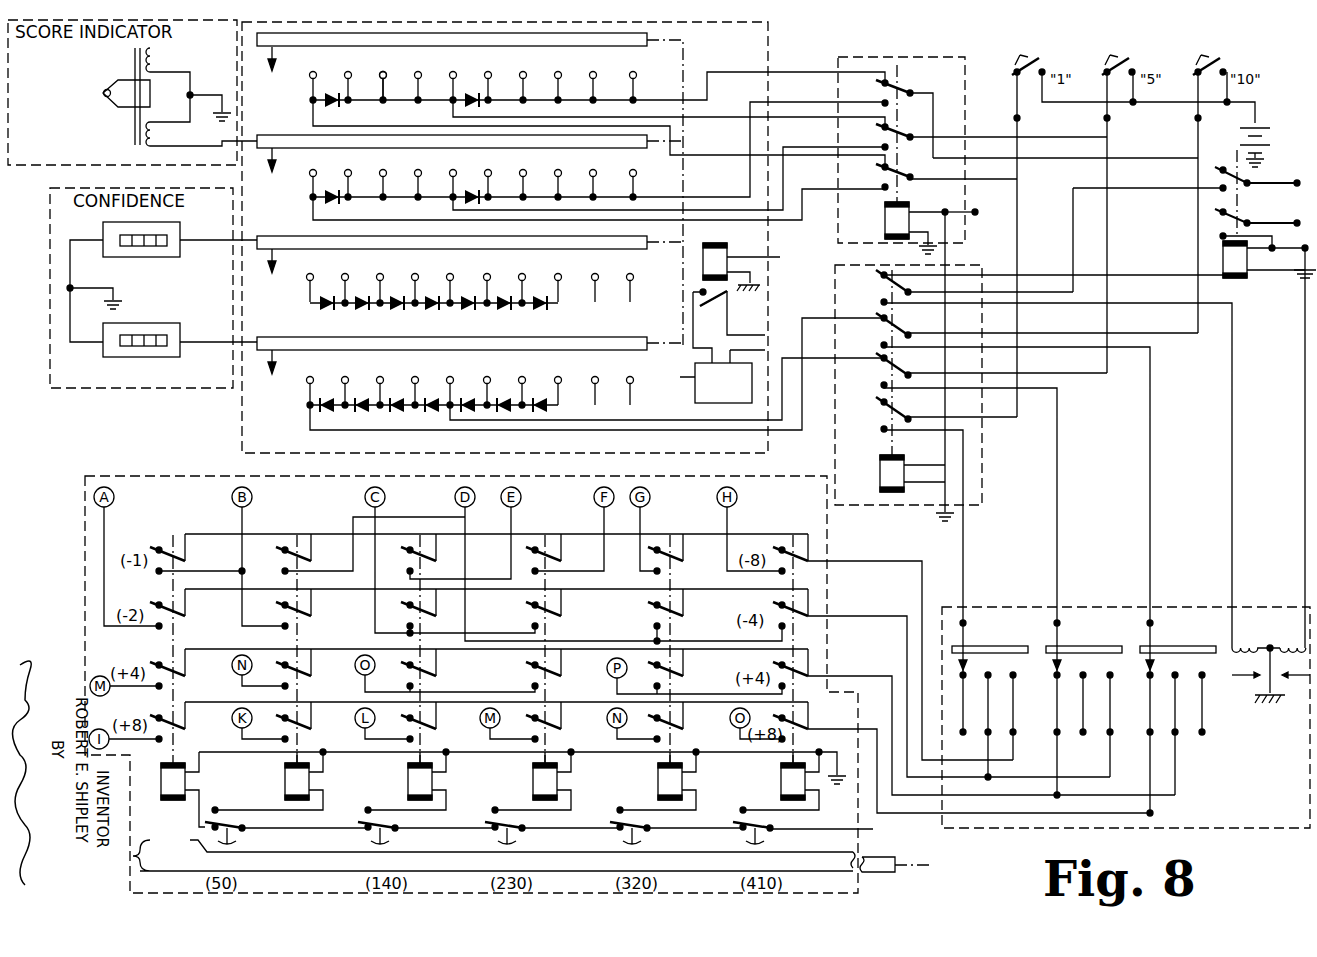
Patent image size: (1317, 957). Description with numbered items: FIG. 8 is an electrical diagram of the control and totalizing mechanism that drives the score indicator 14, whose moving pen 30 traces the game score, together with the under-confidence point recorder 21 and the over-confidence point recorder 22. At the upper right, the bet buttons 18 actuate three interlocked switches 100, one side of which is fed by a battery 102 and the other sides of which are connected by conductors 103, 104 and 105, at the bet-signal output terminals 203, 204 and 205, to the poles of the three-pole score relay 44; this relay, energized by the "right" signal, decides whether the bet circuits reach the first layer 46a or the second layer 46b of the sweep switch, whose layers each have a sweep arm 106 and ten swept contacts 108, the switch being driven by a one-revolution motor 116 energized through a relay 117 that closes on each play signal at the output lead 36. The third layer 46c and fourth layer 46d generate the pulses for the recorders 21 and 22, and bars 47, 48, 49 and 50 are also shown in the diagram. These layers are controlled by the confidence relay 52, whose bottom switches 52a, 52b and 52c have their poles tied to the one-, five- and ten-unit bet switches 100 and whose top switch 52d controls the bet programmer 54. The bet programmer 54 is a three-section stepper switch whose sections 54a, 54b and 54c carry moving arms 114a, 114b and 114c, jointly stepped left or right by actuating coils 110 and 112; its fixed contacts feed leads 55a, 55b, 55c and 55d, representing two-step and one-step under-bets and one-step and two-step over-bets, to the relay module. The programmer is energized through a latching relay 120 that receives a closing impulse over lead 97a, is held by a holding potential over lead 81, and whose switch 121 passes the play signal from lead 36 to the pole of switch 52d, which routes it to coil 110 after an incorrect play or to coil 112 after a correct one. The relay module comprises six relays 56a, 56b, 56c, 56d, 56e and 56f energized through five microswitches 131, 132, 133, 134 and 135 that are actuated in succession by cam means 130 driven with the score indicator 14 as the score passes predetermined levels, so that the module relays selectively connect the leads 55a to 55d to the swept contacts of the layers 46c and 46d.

The score indicator 14 is at (30, 167).
The moving pen 30 is at (108, 98).
The under-confidence point recorder 21 is at (176, 247).
The over-confidence point recorder 22 is at (176, 336).
The bar 47 is at (250, 45).
The bar 48 is at (255, 128).
The bar 49 is at (252, 236).
The bar 50 is at (250, 337).
The sweep arm 106 is at (274, 53).
The swept contacts 108 is at (384, 73).
The first layer 46a is at (598, 61).
The second layer 46b is at (596, 159).
The third layer 46c is at (586, 263).
The fourth layer 46d is at (591, 369).
The relay 117 is at (715, 258).
The output lead 36 is at (768, 258).
The one-revolution motor 116 is at (695, 401).
The score relay 44 is at (967, 75).
The bet buttons 18 is at (1022, 50).
The switches 100 is at (1040, 58).
The bet-signal output terminal 203 is at (1014, 121).
The bet-signal output terminal 204 is at (1103, 121).
The bet-signal output terminal 205 is at (1195, 121).
The conductor 104 is at (1045, 140).
The conductor 105 is at (1137, 143).
The conductor 103 is at (1003, 163).
The battery 102 is at (1268, 133).
The switch 121 is at (1212, 186).
The lead 81 is at (1290, 207).
The latching relay 120 is at (1236, 278).
The lead 97a is at (1296, 270).
The confidence relay 52 is at (927, 385).
The switch 52a is at (884, 412).
The switch 52b is at (884, 368).
The switch 52c is at (884, 328).
The top switch 52d is at (884, 285).
The lead 55a is at (858, 563).
The lead 55b is at (858, 618).
The lead 55c is at (848, 678).
The lead 55d is at (815, 729).
The bet programmer 54 is at (1085, 604).
The section 54a is at (990, 677).
The section 54b is at (1084, 677).
The section 54c is at (1178, 677).
The moving arm 114a is at (966, 660).
The moving arm 114b is at (1060, 660).
The moving arm 114c is at (1153, 660).
The actuating coil 112 is at (1247, 645).
The actuating coil 110 is at (1295, 645).
The relay 56a is at (172, 783).
The relay 56b is at (296, 783).
The relay 56c is at (420, 783).
The relay 56d is at (545, 783).
The relay 56e is at (670, 783).
The relay 56f is at (795, 780).
The microswitch 131 is at (229, 832).
The microswitch 132 is at (382, 832).
The microswitch 133 is at (509, 832).
The microswitch 134 is at (634, 832).
The microswitch 135 is at (757, 832).
The cam means 130 is at (180, 865).